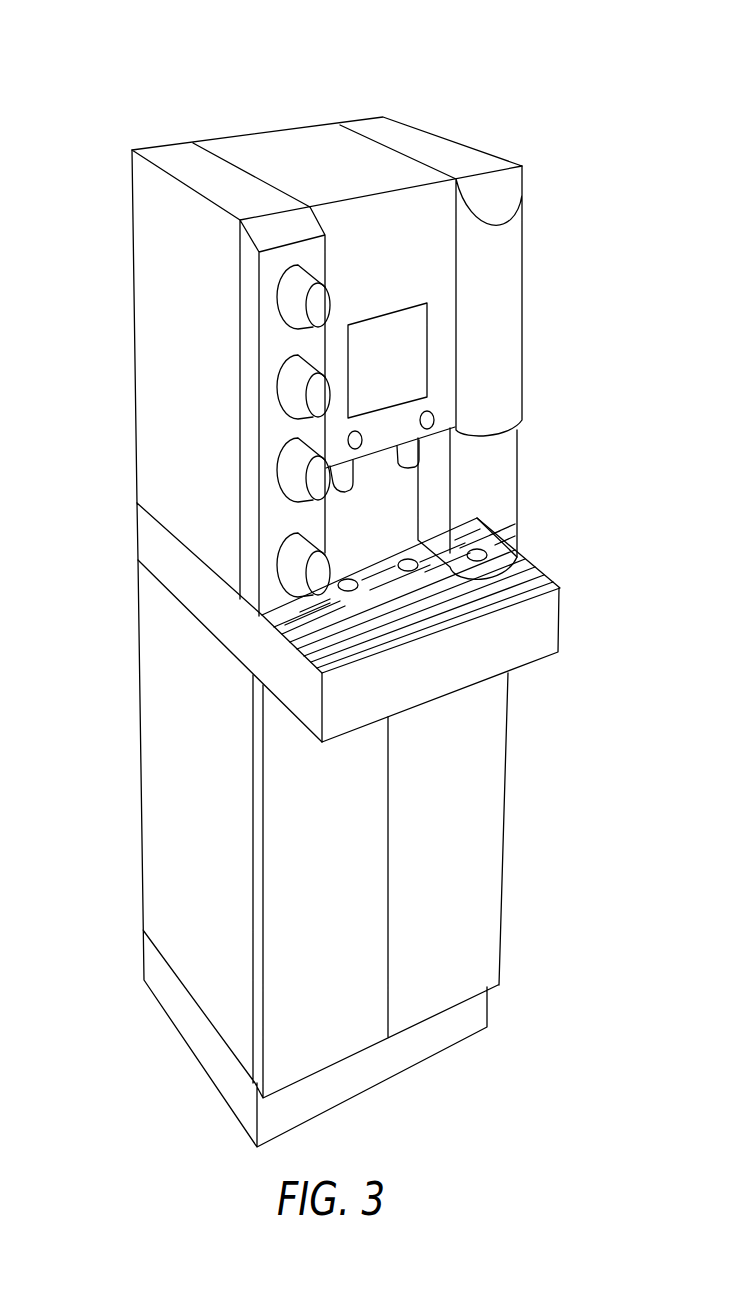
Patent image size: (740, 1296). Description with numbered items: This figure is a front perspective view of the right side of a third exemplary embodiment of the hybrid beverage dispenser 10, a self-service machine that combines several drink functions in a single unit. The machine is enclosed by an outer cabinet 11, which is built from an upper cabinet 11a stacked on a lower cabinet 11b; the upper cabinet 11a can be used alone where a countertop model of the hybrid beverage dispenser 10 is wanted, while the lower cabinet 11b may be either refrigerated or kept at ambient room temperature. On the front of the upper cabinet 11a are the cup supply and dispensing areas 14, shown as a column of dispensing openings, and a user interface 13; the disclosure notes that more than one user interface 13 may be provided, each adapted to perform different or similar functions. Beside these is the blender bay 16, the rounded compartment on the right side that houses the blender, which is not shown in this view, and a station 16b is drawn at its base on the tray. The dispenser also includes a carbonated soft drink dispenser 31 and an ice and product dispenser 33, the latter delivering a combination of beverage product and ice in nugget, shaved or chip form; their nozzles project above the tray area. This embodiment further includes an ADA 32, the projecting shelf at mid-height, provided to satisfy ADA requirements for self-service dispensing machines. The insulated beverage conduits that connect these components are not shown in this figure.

The hybrid beverage dispenser 10 is at (340, 580).
The outer cabinet 11 is at (132, 162).
The upper cabinet 11a is at (160, 563).
The lower cabinet 11b is at (280, 840).
The user interface 13 is at (427, 356).
The cup supply and dispensing areas 14 is at (302, 292).
The blender bay 16 is at (508, 512).
The cup platform 16b is at (520, 532).
The carbonated soft drink dispenser 31 is at (374, 463).
The ADA 32 is at (450, 672).
The ice and product dispenser 33 is at (335, 483).